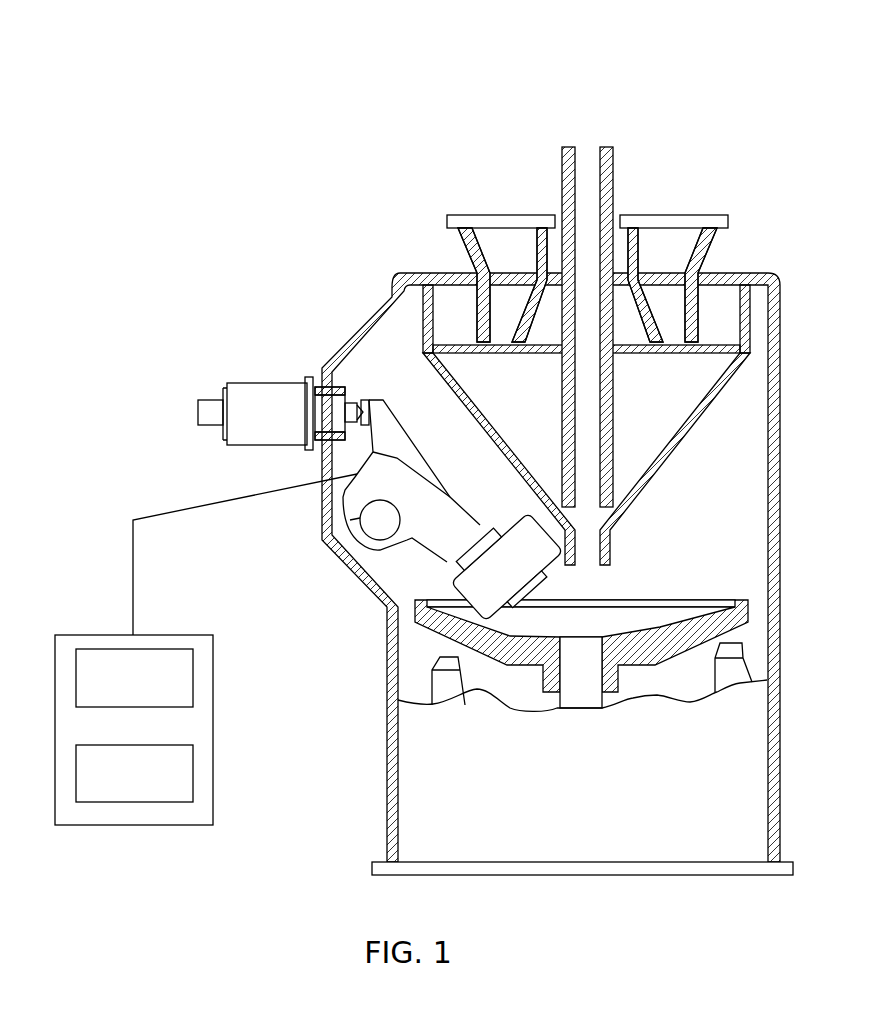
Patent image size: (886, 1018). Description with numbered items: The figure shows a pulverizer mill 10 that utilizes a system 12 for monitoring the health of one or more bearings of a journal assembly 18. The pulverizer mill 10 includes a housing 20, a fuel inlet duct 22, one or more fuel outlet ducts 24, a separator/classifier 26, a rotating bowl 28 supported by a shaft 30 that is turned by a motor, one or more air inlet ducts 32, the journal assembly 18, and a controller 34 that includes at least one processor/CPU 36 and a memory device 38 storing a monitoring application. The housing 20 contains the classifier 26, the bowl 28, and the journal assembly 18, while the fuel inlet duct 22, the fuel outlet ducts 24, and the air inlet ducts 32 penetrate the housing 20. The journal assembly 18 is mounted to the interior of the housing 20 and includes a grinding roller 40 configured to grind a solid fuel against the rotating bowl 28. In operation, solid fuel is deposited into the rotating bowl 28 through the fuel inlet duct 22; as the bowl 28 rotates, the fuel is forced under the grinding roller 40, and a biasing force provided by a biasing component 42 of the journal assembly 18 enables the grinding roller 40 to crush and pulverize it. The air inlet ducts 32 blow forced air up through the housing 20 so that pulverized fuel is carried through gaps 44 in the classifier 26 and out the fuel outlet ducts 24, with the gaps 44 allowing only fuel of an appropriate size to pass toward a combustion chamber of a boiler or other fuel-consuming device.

The pulverizer mill 10 is at (758, 54).
The system for monitoring the health of one or more bearings 12 is at (142, 364).
The journal assembly 18 is at (386, 463).
The housing 20 is at (780, 432).
The fuel inlet duct 22 is at (562, 152).
The fuel outlet ducts 24 is at (458, 214).
The separator/classifier 26 is at (678, 451).
The rotating bowl 28 is at (655, 598).
The shaft 30 is at (583, 695).
The air inlet ducts 32 is at (447, 688).
The controller 34 is at (206, 649).
The processor/CPU 36 is at (117, 689).
The memory device 38 is at (117, 786).
The grinding roller 40 is at (518, 513).
The biasing component 42 is at (372, 524).
The gaps 44 is at (553, 494).